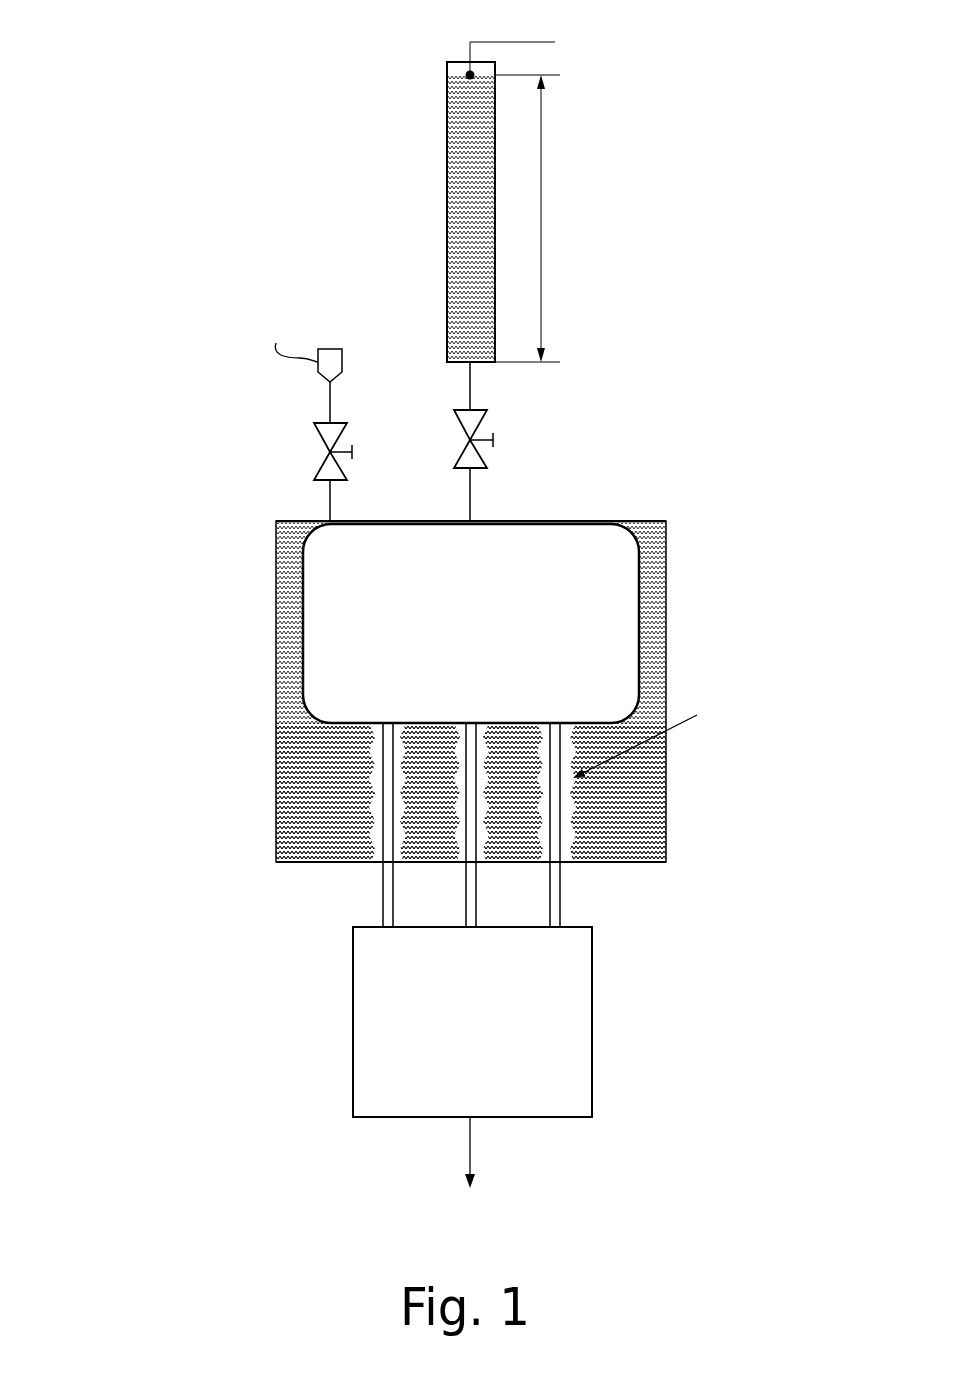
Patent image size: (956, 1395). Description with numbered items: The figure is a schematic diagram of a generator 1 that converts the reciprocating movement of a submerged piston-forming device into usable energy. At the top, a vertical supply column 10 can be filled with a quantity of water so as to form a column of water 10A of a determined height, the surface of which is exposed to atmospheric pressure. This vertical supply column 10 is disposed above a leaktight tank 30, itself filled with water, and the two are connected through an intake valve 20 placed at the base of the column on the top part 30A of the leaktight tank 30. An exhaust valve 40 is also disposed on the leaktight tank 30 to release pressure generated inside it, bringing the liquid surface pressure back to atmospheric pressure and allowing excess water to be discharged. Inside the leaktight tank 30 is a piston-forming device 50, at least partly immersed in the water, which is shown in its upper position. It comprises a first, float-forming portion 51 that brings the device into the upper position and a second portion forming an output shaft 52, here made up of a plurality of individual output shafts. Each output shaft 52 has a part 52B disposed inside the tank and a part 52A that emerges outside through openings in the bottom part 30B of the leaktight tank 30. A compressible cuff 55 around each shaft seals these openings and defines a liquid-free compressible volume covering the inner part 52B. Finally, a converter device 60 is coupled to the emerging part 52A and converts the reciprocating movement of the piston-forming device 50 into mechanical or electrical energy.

The generator 1 is at (160, 162).
The vertical supply column 10 is at (460, 189).
The column of water 10A is at (475, 222).
The intake valve 20 is at (493, 440).
The leaktight tank 30 is at (441, 694).
The top part of the leaktight tank 30A is at (610, 521).
The bottom part of the leaktight tank 30B is at (617, 863).
The exhaust valve 40 is at (330, 452).
The piston-forming device 50 is at (290, 727).
The float-forming portion 51 is at (603, 571).
The output shaft 52 is at (379, 796).
The part of the output shaft emerging outside the leaktight tank 52A is at (388, 898).
The part of the output shaft disposed inside the leaktight tank 52B is at (388, 805).
The compressible cuff 55 is at (612, 818).
The converter device 60 is at (483, 1036).